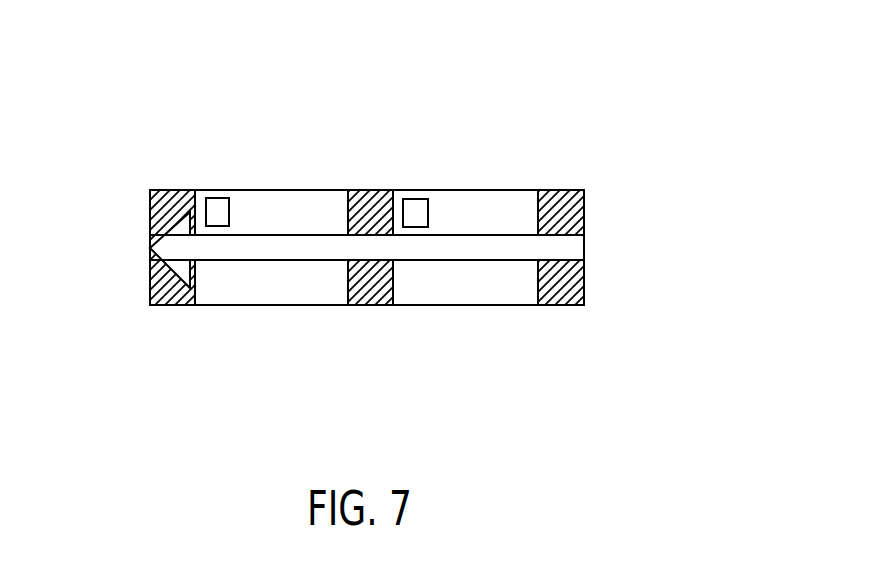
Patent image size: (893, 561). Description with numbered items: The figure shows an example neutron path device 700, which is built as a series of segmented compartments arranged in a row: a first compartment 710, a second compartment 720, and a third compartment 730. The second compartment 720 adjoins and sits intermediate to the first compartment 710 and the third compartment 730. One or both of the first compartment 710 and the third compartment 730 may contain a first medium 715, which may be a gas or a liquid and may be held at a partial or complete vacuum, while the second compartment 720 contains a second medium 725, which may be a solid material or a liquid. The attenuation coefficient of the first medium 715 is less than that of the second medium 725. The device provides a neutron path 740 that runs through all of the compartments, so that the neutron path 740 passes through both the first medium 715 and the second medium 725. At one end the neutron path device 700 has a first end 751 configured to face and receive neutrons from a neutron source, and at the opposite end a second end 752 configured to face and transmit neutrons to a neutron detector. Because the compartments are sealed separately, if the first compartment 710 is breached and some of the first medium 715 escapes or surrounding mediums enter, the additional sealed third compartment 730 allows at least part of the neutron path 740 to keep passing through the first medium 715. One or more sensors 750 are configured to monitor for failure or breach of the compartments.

The neutron path device 700 is at (604, 114).
The first compartment 710 is at (283, 190).
The first medium 715 is at (450, 292).
The second compartment 720 is at (375, 190).
The second medium 725 is at (373, 292).
The third compartment 730 is at (455, 190).
The neutron path 740 is at (288, 262).
The sensors 750 is at (218, 196).
The first end 751 is at (585, 280).
The second end 752 is at (148, 278).